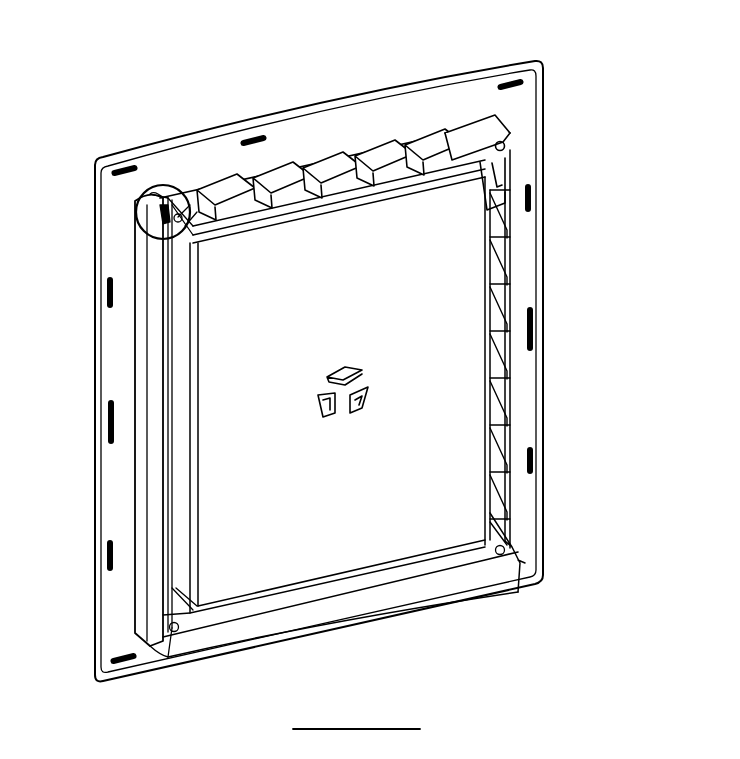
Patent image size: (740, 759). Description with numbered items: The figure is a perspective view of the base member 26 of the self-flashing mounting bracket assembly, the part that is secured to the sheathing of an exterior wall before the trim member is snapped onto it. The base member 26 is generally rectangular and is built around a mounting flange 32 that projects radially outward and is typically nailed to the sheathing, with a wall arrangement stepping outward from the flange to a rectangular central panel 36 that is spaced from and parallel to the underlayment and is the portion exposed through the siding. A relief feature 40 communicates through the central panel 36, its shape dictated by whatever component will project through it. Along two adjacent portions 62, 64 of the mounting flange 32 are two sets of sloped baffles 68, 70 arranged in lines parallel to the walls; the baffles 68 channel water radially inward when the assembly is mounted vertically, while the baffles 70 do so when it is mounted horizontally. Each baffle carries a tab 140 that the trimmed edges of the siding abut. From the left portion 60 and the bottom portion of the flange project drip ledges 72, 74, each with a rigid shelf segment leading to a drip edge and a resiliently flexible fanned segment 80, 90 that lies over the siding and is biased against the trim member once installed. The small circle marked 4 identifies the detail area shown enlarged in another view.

The base member 26 is at (578, 80).
The mounting flange 32 is at (550, 149).
The first or left portion 60 is at (113, 337).
The drip ledge 72 is at (134, 514).
The fanned segment 80 is at (152, 379).
The portion of the mounting flange 64 is at (283, 138).
The sloped baffles 70 is at (327, 163).
The tabs 140 is at (428, 137).
The portion of the mounting flange 62 is at (525, 422).
The sloped baffles 68 is at (510, 283).
The central panel 36 is at (330, 329).
The relief feature 40 is at (363, 407).
The drip ledge 74 is at (411, 598).
The fanned segment 90 is at (467, 586).
The detail circle (FIG. 4) 4 is at (181, 189).